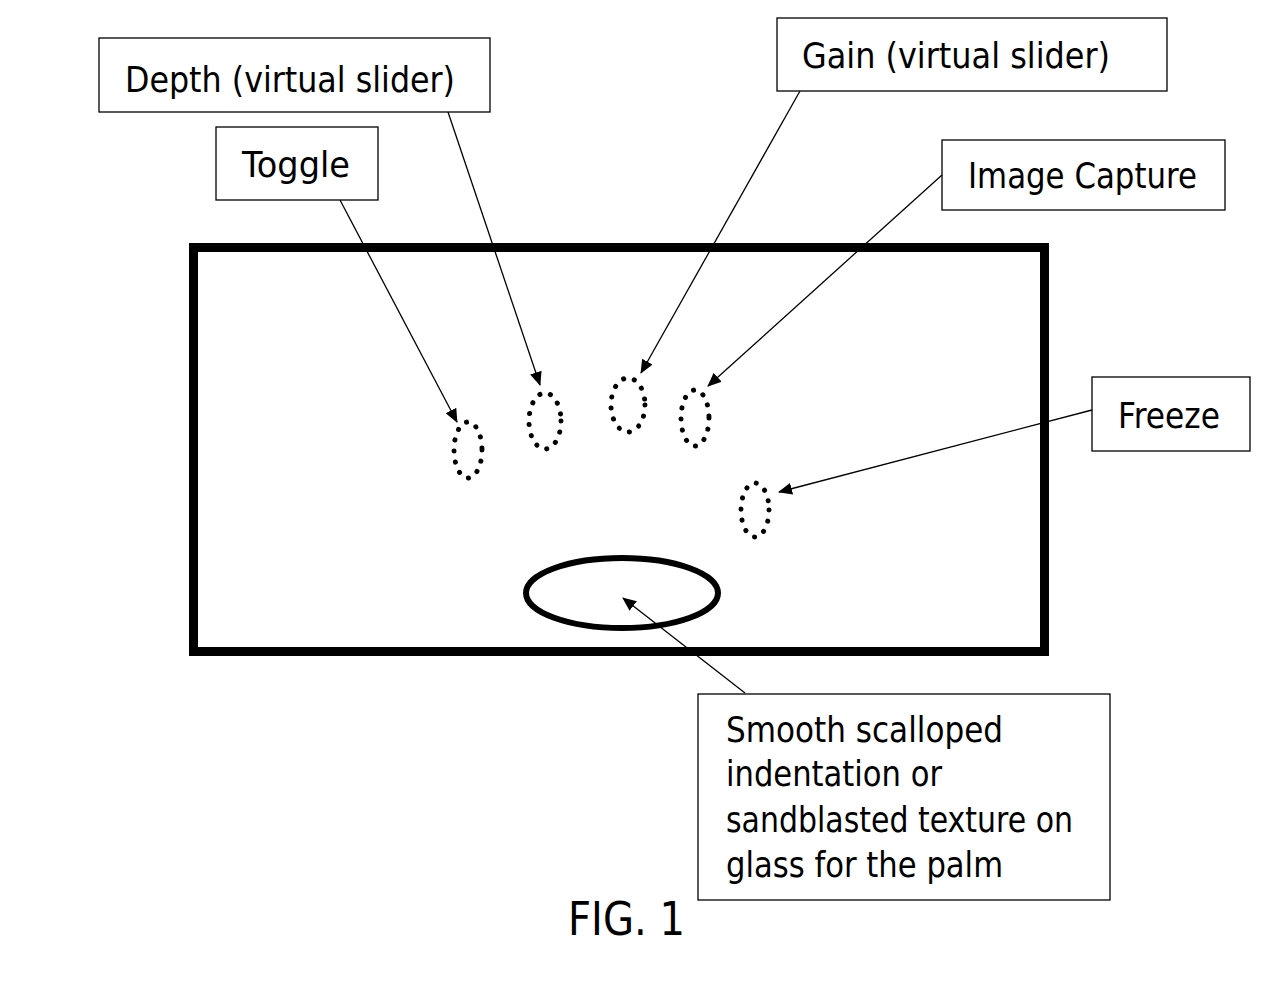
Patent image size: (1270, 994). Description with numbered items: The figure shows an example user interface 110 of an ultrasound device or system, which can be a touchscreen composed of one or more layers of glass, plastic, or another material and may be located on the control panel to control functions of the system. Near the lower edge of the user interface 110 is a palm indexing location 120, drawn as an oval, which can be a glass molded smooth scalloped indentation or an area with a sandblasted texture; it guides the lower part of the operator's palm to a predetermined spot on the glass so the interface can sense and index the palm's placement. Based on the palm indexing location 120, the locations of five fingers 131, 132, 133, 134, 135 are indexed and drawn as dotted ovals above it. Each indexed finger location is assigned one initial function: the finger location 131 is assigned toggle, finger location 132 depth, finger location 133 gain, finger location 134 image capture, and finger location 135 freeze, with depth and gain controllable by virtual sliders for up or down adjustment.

The user interface 110 is at (192, 468).
The palm indexing location 120 is at (545, 617).
The indexed finger location 131 is at (453, 463).
The indexed finger location 132 is at (533, 412).
The indexed finger location 133 is at (617, 383).
The indexed finger location 134 is at (712, 412).
The indexed finger location 135 is at (773, 508).